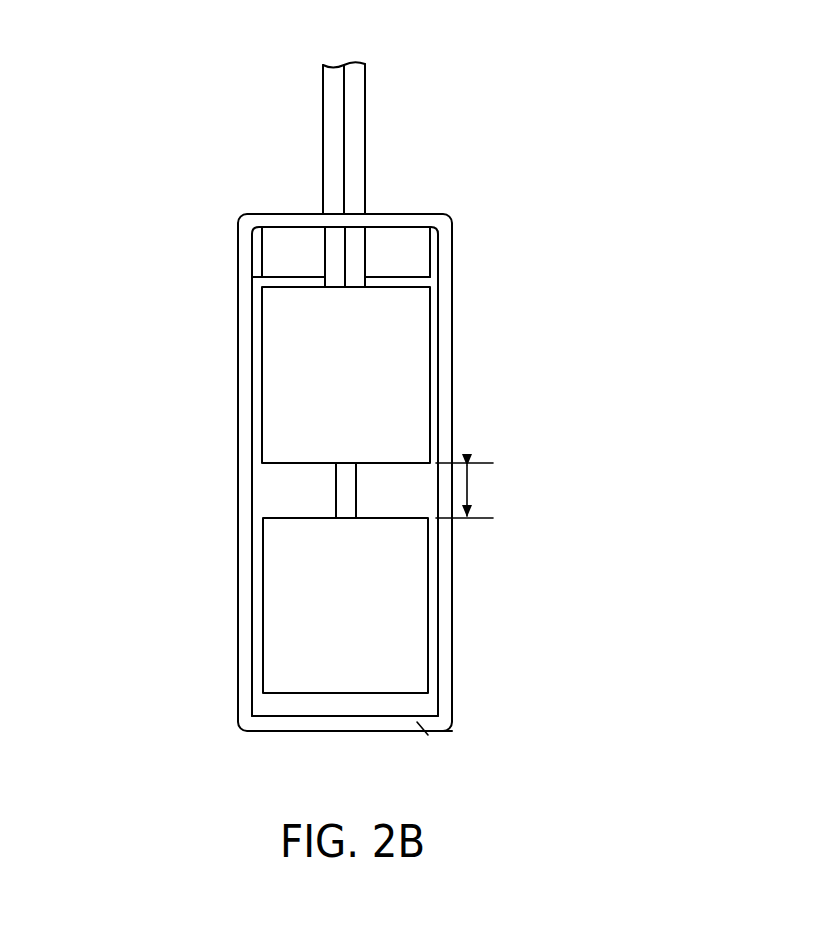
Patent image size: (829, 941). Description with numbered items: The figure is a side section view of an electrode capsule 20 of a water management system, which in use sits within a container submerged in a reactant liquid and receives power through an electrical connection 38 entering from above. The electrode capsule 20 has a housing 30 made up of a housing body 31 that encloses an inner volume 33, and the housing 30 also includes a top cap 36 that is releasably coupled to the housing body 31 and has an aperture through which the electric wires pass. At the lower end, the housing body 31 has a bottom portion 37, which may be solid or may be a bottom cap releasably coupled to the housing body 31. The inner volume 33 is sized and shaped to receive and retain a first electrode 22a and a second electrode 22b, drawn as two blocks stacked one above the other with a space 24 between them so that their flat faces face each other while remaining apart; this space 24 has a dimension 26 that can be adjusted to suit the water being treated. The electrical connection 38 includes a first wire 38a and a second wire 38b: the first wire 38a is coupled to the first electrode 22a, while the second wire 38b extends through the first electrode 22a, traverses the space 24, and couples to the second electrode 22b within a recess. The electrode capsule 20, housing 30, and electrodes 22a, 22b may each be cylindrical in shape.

The electrode capsule 20 is at (178, 196).
The first electrode 22a is at (407, 382).
The second electrode 22b is at (410, 640).
The space 24 is at (272, 498).
The dimension 26 is at (471, 489).
The housing 30 is at (245, 360).
The housing body 31 is at (384, 270).
The inner volume 33 is at (281, 710).
The top cap 36 is at (433, 222).
The bottom portion 37 is at (417, 722).
The electrical connection 38 is at (279, 67).
The first wire 38a is at (333, 137).
The second wire 38b is at (353, 112).